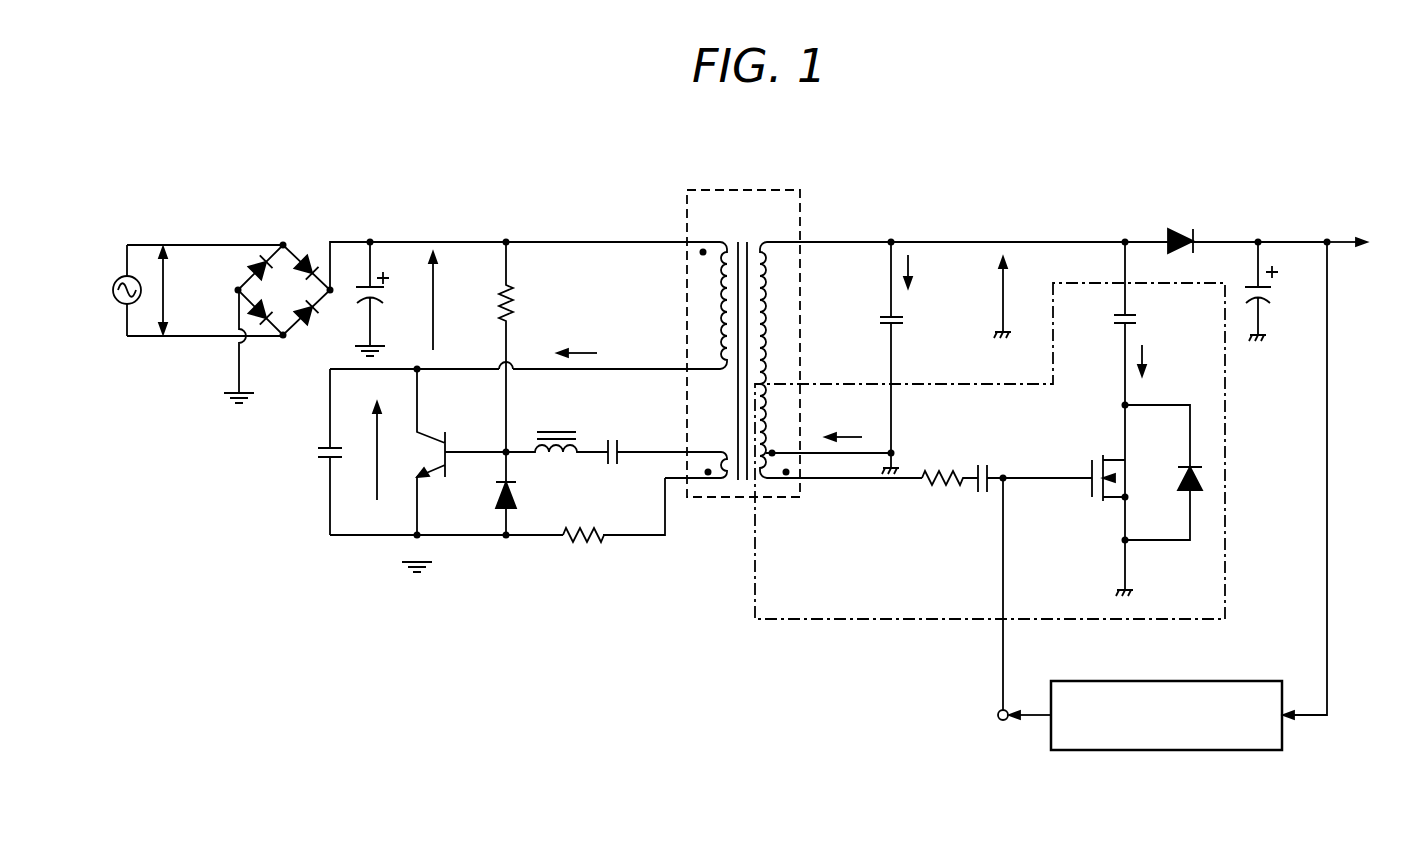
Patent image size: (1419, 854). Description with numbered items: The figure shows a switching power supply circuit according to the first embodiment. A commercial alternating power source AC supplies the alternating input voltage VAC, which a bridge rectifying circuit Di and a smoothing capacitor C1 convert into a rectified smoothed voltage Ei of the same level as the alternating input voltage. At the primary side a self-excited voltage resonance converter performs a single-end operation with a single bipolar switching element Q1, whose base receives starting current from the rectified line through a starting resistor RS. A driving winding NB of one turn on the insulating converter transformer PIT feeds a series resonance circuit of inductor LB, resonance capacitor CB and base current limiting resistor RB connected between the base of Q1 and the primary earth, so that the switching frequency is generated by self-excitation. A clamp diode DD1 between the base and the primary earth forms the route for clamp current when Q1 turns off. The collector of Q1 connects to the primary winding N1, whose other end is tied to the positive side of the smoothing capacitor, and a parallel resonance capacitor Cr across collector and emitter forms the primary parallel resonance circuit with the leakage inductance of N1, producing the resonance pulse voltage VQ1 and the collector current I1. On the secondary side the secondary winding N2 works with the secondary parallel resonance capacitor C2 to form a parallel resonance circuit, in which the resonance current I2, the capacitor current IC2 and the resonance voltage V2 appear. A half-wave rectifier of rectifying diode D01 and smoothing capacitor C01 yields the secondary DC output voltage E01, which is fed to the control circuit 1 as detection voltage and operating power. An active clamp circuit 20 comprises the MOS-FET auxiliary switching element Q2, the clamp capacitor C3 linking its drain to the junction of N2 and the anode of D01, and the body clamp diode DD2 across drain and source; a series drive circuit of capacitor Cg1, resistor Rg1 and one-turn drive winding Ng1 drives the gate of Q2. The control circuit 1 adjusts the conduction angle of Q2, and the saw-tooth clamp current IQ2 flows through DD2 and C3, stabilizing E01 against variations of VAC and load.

The commercial alternating power source AC is at (184, 290).
The alternating input voltage VAC is at (187, 290).
The bridge rectifying circuit Di is at (297, 302).
The starting resistor RS is at (386, 347).
The smoothing capacitor C1 is at (362, 299).
The rectified smoothed voltage Ei is at (435, 301).
The collector current I1 is at (577, 341).
The switching element Q1 is at (454, 470).
The parallel resonance capacitor Cr is at (314, 452).
The resonance pulse voltage VQ1 is at (379, 451).
The clamp diode DD1 is at (481, 493).
The inductor LB is at (557, 461).
The resonance capacitor CB is at (618, 438).
The base current limiting resistor RB is at (583, 550).
The driving winding NB is at (692, 461).
The insulating converter transformer PIT is at (743, 343).
The primary winding N1 is at (702, 286).
The secondary winding N2 is at (788, 286).
The drive winding Ng1 is at (795, 470).
The resonance current I2 is at (843, 425).
The current of secondary parallel resonance capacitor IC2 is at (926, 271).
The secondary parallel resonance capacitor C2 is at (909, 358).
The resonance voltage V2 is at (1004, 297).
The resistor Rg1 is at (950, 494).
The capacitor Cg1 is at (1027, 463).
The auxiliary switching element Q2 is at (1107, 500).
The clamp diode DD2 is at (1163, 472).
The clamp capacitor C3 is at (1109, 323).
The clamp current IQ2 is at (1159, 360).
The rectifying diode D01 is at (1182, 226).
The smoothing capacitor C01 is at (1284, 291).
The secondary DC output voltage E01 is at (1372, 242).
The active clamp circuit 20 is at (752, 593).
The control circuit 1 is at (1165, 681).